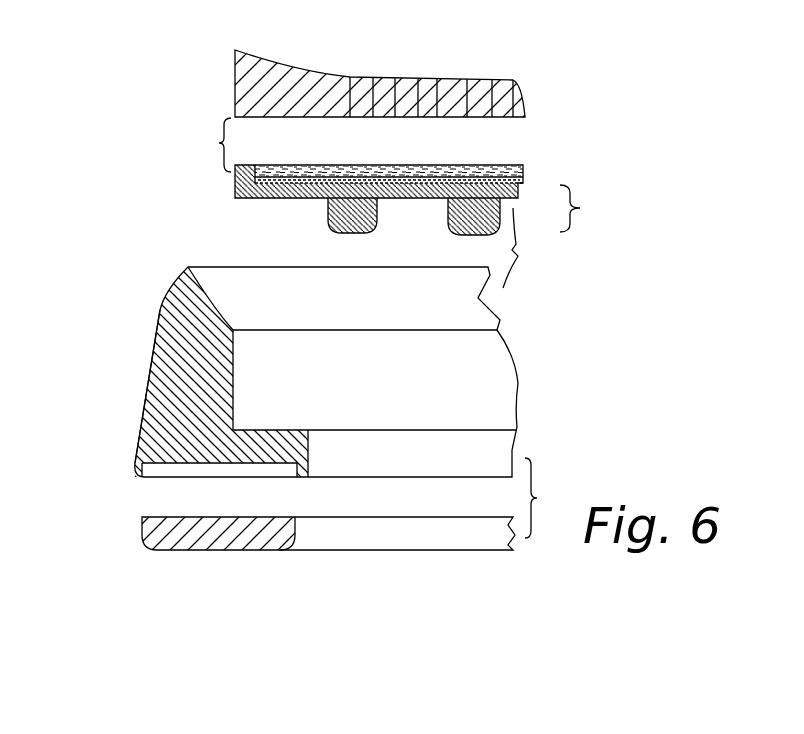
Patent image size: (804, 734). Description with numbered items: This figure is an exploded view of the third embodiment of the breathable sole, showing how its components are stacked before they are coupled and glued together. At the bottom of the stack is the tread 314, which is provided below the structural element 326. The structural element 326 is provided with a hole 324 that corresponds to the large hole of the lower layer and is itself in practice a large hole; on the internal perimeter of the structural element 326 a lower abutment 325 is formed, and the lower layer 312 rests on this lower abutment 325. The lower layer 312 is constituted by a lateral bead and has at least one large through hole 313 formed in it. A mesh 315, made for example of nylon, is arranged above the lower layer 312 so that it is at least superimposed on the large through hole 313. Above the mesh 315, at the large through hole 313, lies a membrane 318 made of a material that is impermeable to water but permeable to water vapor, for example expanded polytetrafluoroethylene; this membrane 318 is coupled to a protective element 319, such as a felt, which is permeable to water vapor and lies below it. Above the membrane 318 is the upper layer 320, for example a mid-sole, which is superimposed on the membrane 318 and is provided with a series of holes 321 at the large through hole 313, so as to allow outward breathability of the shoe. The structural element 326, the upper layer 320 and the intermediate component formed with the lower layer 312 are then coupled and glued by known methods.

The lower layer 312 is at (604, 208).
The large through hole 313 is at (411, 198).
The tread 314 is at (190, 545).
The mesh 315 is at (233, 182).
The membrane 318 is at (497, 165).
The protective element 319 is at (523, 171).
The upper layer 320 is at (305, 69).
The holes 321 is at (411, 93).
The hole 324 is at (428, 451).
The lower abutment 325 is at (283, 430).
The structural element 326 is at (158, 339).